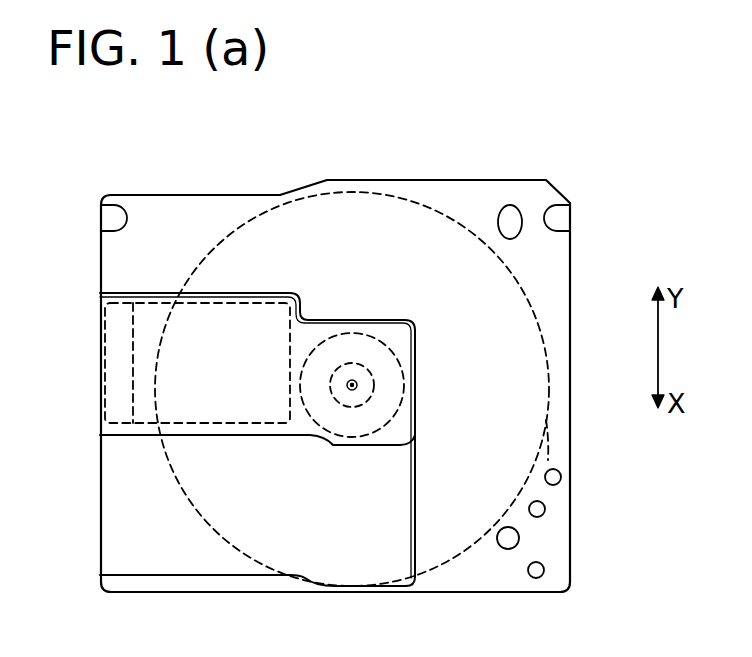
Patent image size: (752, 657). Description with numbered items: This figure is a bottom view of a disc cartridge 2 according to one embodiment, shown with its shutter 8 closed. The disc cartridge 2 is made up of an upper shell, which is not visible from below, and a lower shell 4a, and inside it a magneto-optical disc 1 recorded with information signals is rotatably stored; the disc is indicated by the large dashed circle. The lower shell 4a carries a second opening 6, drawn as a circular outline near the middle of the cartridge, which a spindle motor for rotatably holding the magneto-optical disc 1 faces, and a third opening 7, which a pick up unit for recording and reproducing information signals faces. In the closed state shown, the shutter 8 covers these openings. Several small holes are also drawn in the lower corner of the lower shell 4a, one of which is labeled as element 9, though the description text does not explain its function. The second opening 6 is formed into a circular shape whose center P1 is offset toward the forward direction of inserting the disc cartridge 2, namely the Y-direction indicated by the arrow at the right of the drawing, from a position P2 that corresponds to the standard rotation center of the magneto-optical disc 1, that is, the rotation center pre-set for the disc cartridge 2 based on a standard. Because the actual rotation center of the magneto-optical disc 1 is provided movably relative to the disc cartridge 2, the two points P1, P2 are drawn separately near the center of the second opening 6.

The magneto-optical disc 1 is at (520, 277).
The disc cartridge 2 is at (530, 190).
The second opening 6 is at (362, 345).
The third opening 7 is at (140, 323).
The shutter 8 is at (118, 397).
The center of the second opening P1 is at (352, 385).
The position corresponding to the standard rotation center P2 is at (352, 385).
The lower shell 4a is at (558, 446).
The positioning hole 9 is at (518, 538).